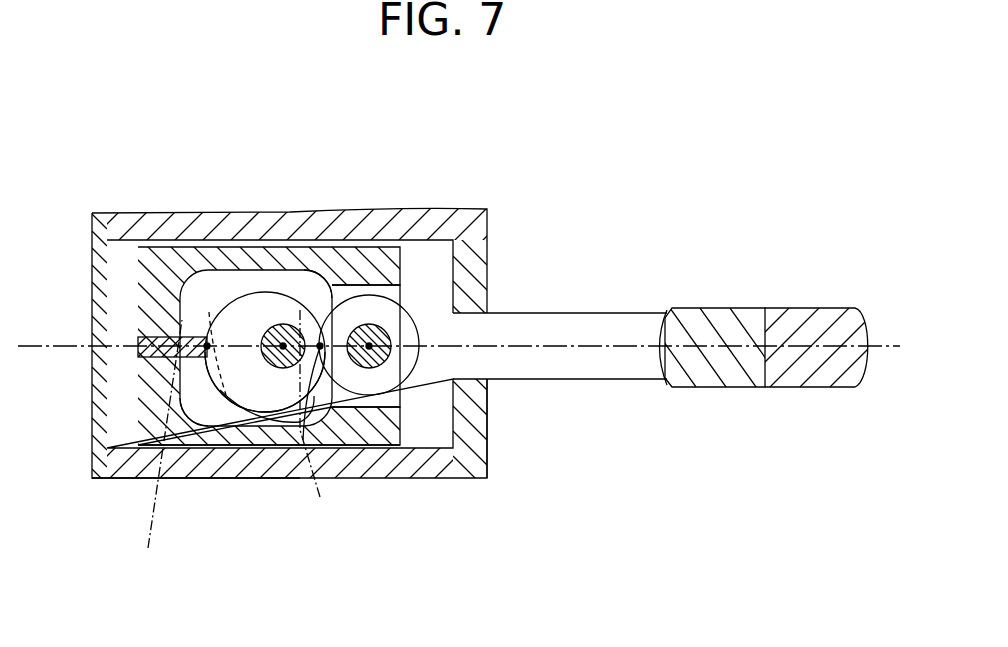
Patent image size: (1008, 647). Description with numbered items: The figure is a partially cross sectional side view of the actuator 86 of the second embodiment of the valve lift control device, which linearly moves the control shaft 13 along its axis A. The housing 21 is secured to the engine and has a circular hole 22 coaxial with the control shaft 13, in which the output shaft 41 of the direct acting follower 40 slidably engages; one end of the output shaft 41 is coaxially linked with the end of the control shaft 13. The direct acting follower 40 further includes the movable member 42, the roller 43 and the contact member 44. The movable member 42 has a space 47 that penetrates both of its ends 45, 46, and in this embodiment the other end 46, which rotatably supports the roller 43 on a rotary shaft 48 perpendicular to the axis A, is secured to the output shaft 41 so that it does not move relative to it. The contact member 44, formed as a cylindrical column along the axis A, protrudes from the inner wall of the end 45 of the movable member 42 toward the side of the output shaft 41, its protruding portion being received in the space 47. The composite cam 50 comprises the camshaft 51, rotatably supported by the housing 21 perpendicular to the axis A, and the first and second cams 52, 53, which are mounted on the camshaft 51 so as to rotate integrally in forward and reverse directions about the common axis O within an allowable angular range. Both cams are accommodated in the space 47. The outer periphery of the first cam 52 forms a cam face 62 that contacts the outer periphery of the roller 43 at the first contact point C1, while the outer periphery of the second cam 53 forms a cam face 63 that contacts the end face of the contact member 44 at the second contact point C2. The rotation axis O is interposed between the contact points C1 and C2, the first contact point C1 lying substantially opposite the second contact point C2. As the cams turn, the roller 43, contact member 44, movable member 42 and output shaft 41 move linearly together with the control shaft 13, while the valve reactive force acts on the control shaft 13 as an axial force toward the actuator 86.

The control shaft 13 is at (848, 328).
The housing 21 is at (138, 482).
The circular hole 22 is at (483, 380).
The direct acting follower 40 is at (415, 256).
The output shaft 41 is at (532, 325).
The movable member 42 is at (235, 252).
The roller 43 is at (377, 307).
The contact member 44 is at (206, 330).
The one end of movable member 45 is at (143, 383).
The other end of movable member 46 is at (412, 383).
The space 47 is at (213, 418).
The rotary shaft 48 is at (408, 380).
The composite cam 50 is at (262, 295).
The camshaft 51 is at (265, 360).
The first cam 52 is at (280, 367).
The second cam 53 is at (182, 333).
The cam face 62 is at (307, 283).
The cam face 63 is at (185, 440).
The actuator 86 is at (487, 483).
The common axis O is at (283, 346).
The axis A is at (881, 347).
The first contact point C1 is at (324, 431).
The second contact point C2 is at (152, 456).